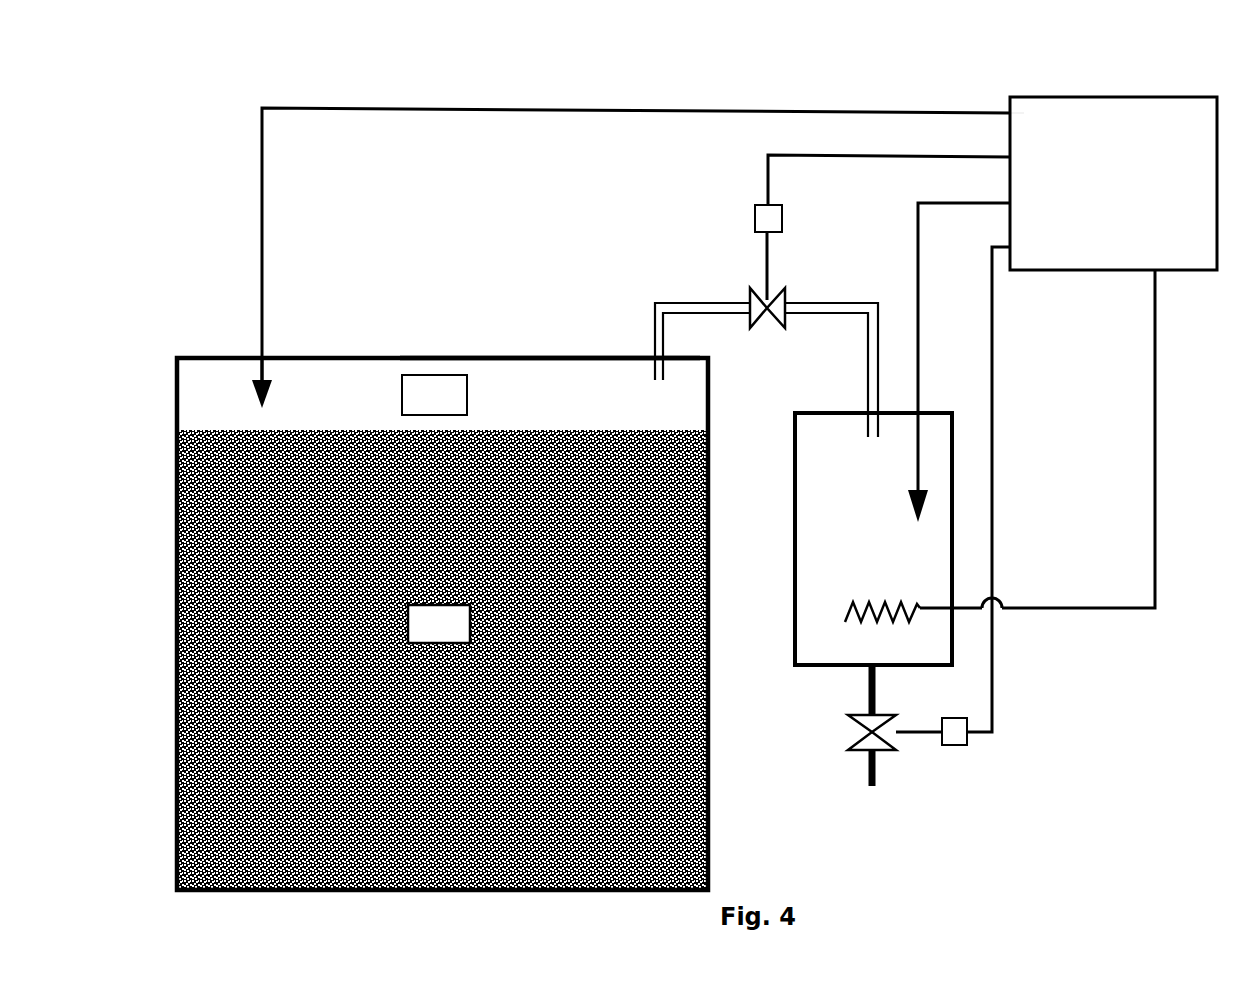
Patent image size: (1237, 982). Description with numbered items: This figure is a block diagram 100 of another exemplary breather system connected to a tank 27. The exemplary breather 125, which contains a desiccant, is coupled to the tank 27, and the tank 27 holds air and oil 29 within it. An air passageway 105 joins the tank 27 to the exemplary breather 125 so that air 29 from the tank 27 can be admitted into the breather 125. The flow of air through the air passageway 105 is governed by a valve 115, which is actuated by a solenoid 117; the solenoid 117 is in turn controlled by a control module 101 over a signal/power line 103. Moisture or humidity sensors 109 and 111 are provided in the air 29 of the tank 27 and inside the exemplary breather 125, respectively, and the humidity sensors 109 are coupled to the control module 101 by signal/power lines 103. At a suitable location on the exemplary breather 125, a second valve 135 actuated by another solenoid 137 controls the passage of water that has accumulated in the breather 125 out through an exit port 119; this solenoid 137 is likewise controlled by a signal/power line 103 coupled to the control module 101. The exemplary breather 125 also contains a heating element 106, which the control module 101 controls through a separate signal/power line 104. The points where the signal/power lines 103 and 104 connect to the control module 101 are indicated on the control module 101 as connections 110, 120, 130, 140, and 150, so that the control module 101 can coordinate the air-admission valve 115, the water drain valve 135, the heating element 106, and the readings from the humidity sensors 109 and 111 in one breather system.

The block diagram of exemplary breather system 100 is at (266, 59).
The tank 27 is at (710, 846).
The air and oil 29 is at (532, 394).
The control module 101 is at (1122, 94).
The signal/power line 103 is at (568, 106).
The signal/power line 104 is at (1157, 516).
The air passageway 105 is at (684, 302).
The heating element 106 is at (866, 604).
The humidity sensor 109 is at (266, 392).
The connection to the control module 110 is at (1033, 118).
The humidity sensor 111 is at (909, 507).
The valve 115 is at (770, 334).
The solenoid 117 is at (754, 214).
The exit port 119 is at (874, 788).
The connection to the control module 120 is at (1040, 163).
The exemplary breather 125 is at (794, 562).
The connection to the control module 130 is at (1040, 208).
The valve 135 is at (860, 736).
The solenoid 137 is at (969, 745).
The connection to the control module 140 is at (1040, 253).
The connection to the control module 150 is at (1159, 253).